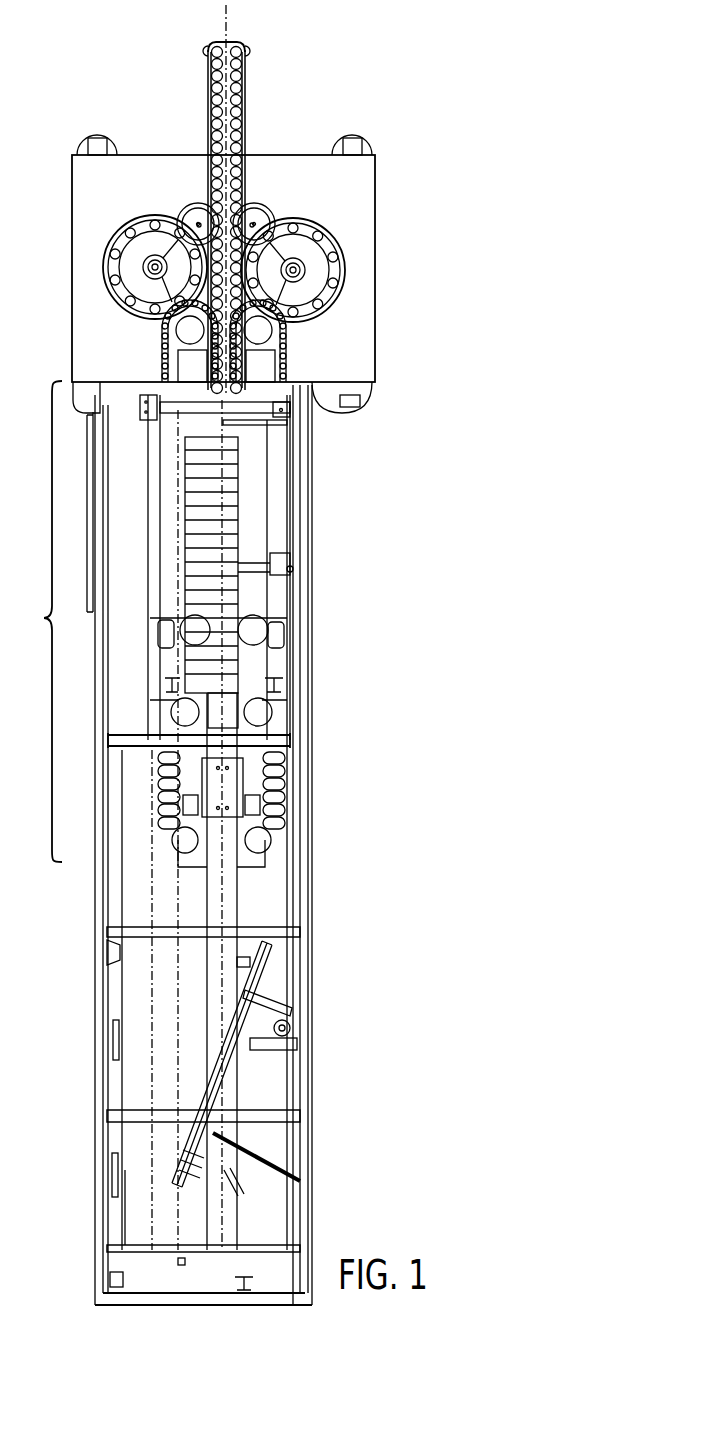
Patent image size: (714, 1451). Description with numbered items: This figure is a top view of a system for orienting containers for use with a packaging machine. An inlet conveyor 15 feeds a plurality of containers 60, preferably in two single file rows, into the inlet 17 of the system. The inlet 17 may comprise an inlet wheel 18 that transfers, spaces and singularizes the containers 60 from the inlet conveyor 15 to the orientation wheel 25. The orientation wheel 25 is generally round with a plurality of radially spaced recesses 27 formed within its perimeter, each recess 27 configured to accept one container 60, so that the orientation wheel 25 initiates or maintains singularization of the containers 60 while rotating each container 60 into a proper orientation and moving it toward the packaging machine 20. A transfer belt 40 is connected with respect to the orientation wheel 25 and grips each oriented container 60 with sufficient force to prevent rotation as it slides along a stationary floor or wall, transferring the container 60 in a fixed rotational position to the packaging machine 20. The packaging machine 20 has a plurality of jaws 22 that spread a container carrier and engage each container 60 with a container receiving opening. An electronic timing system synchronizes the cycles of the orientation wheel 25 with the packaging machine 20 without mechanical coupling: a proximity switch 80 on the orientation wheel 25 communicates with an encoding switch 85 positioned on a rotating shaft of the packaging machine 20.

The inlet conveyor 15 is at (233, 43).
The container 60 is at (235, 107).
The inlet 17 is at (204, 222).
The inlet wheel 18 is at (195, 212).
The proximity switch 80 is at (149, 262).
The orientation wheel 25 is at (130, 268).
The recess 27 is at (133, 303).
The transfer belt 40 is at (300, 363).
The packaging machine 20 is at (160, 843).
The encoding switch 85 is at (292, 566).
The jaws 22 is at (230, 607).